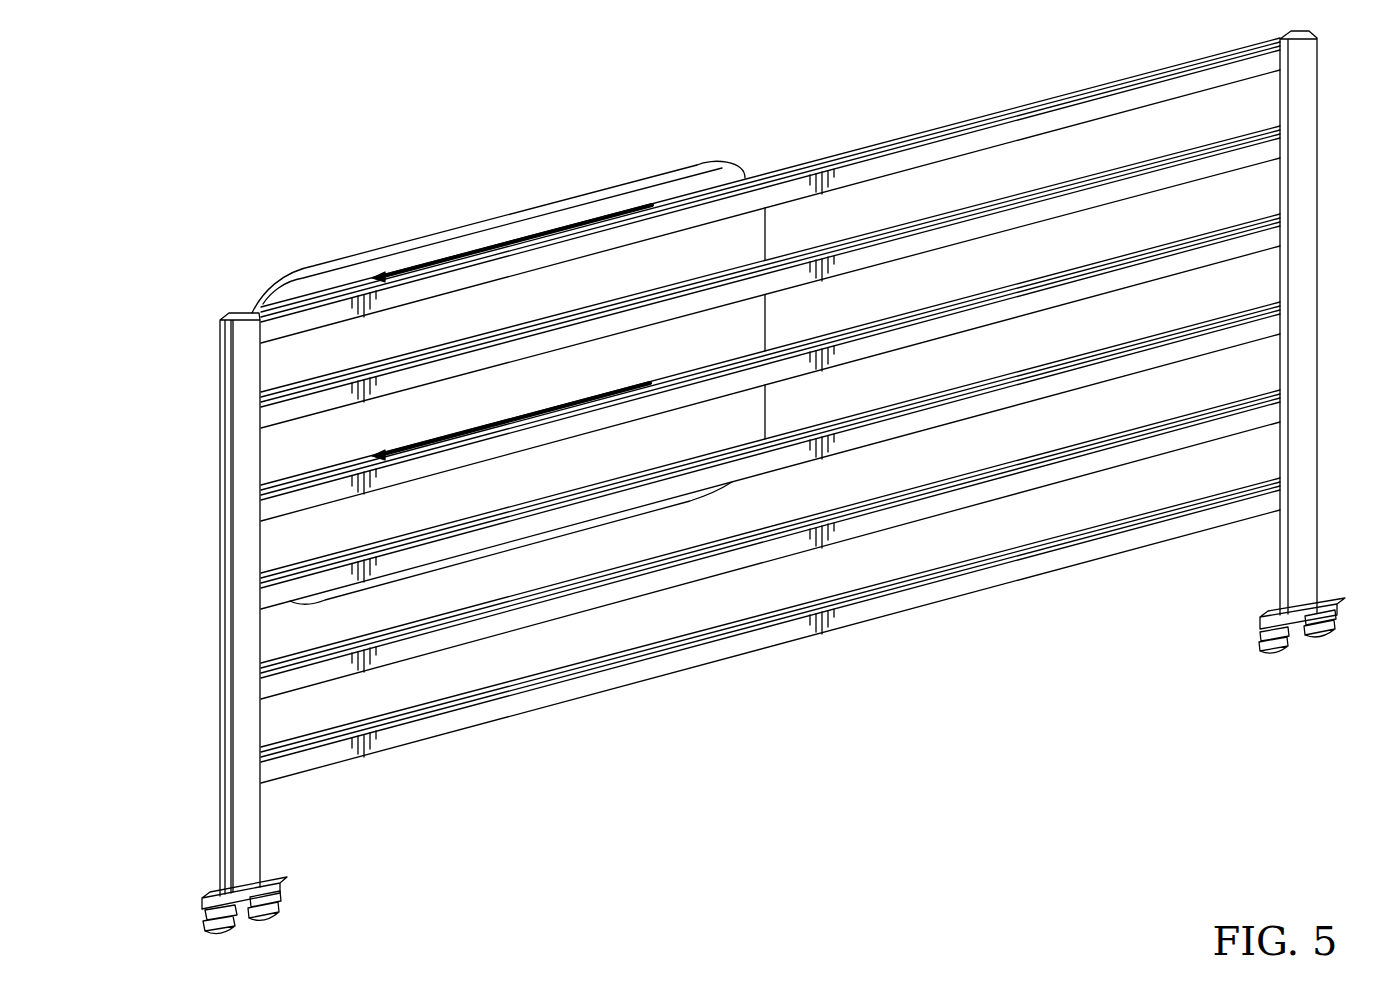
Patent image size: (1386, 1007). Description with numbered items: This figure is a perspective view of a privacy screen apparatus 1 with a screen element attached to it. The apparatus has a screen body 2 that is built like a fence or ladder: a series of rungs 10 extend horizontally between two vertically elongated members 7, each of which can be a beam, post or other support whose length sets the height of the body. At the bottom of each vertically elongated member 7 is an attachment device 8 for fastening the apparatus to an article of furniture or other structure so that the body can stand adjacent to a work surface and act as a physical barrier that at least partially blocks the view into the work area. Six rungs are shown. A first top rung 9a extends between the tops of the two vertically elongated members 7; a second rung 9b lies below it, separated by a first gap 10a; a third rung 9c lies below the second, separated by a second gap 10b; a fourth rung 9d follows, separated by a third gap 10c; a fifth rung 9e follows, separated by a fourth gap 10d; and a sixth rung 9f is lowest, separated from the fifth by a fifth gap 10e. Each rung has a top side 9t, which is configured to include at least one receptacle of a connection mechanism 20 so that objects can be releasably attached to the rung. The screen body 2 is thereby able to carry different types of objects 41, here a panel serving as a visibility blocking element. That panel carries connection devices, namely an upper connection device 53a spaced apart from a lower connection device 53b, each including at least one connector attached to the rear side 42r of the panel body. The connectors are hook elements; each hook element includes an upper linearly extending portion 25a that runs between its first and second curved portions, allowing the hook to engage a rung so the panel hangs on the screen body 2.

The privacy screen apparatus 1 is at (1333, 124).
The screen body 2 is at (937, 108).
The vertically elongated member 7 is at (1316, 571).
The attachment device 8 is at (288, 890).
The first top rung 9a is at (900, 162).
The second rung 9b is at (1043, 212).
The third rung 9c is at (1060, 292).
The fourth rung 9d is at (1035, 385).
The fifth rung 9e is at (1053, 476).
The sixth rung 9f is at (1058, 560).
The top side 9t is at (1006, 122).
The gap 10 is at (284, 717).
The first gap 10a is at (971, 187).
The second gap 10b is at (975, 278).
The third gap 10c is at (975, 363).
The fourth gap 10d is at (975, 456).
The fifth gap 10e is at (971, 543).
The connection mechanism 20 is at (213, 421).
The upper linearly extending portion 25a is at (405, 270).
The object 41 is at (425, 204).
The rear side 42r is at (660, 268).
The upper connection device 53a is at (497, 238).
The lower connection device 53b is at (541, 404).